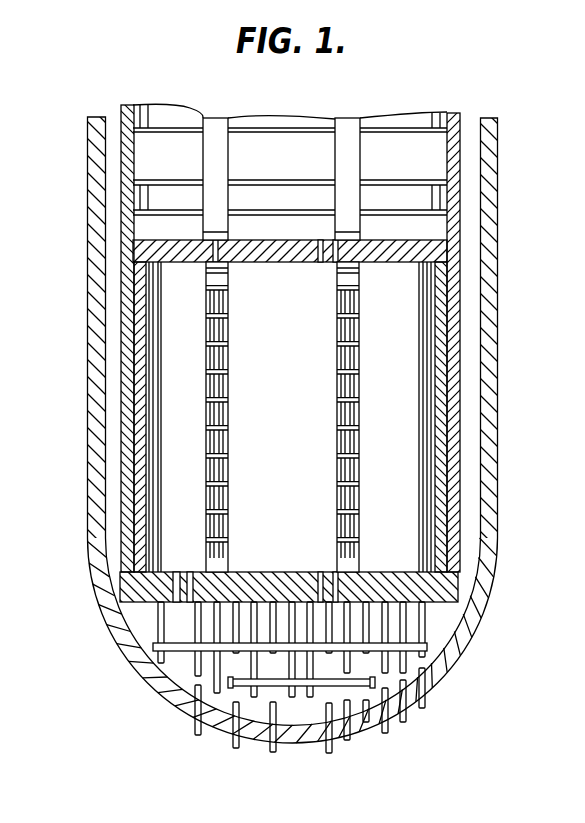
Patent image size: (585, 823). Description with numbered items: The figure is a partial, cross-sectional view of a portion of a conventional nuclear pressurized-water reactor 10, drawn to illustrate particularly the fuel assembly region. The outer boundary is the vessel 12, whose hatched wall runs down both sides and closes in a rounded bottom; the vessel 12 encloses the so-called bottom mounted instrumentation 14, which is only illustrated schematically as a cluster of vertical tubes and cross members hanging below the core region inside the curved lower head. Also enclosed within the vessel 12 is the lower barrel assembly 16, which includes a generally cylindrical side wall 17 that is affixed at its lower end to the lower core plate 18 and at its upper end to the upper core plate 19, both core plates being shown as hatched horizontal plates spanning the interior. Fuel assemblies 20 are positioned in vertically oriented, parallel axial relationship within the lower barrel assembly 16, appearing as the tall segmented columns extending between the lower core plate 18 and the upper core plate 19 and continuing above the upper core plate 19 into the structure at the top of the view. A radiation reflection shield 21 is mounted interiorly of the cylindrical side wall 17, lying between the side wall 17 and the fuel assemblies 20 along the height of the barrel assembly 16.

The pressurized-water reactor 10 is at (536, 202).
The vessel 12 is at (495, 377).
The bottom mounted instrumentation 14 is at (434, 627).
The lower barrel assembly 16 is at (116, 399).
The cylindrical side wall 17 is at (121, 465).
The lower core plate 18 is at (125, 593).
The upper core plate 19 is at (133, 250).
The fuel assemblies 20 is at (303, 434).
The radiation reflection shield 21 is at (138, 497).